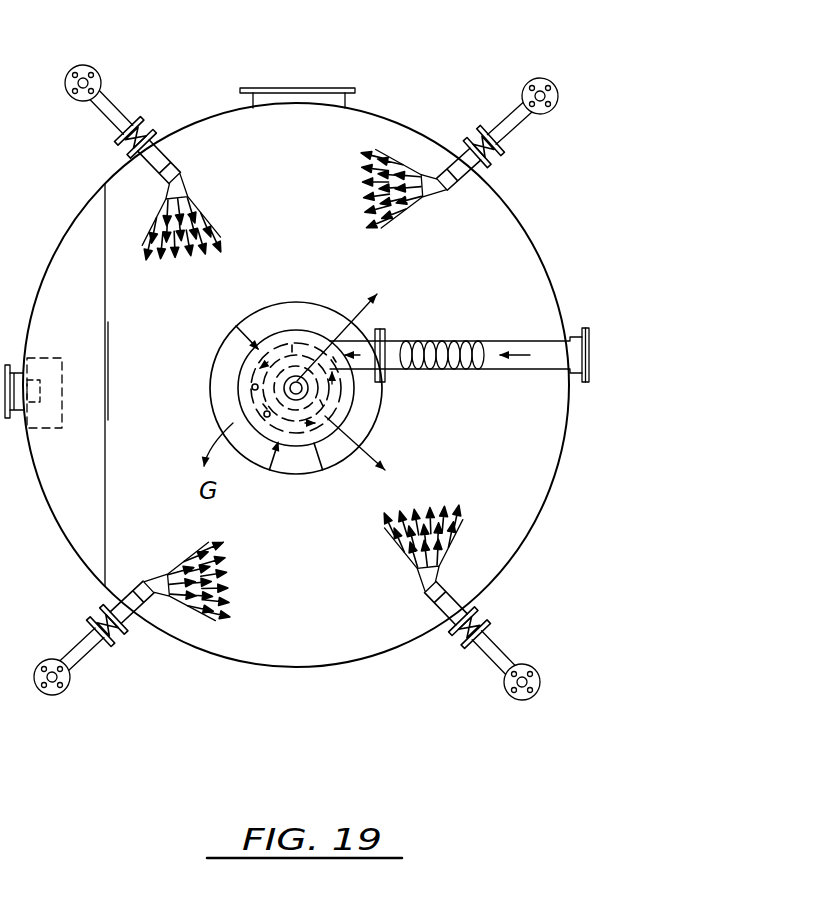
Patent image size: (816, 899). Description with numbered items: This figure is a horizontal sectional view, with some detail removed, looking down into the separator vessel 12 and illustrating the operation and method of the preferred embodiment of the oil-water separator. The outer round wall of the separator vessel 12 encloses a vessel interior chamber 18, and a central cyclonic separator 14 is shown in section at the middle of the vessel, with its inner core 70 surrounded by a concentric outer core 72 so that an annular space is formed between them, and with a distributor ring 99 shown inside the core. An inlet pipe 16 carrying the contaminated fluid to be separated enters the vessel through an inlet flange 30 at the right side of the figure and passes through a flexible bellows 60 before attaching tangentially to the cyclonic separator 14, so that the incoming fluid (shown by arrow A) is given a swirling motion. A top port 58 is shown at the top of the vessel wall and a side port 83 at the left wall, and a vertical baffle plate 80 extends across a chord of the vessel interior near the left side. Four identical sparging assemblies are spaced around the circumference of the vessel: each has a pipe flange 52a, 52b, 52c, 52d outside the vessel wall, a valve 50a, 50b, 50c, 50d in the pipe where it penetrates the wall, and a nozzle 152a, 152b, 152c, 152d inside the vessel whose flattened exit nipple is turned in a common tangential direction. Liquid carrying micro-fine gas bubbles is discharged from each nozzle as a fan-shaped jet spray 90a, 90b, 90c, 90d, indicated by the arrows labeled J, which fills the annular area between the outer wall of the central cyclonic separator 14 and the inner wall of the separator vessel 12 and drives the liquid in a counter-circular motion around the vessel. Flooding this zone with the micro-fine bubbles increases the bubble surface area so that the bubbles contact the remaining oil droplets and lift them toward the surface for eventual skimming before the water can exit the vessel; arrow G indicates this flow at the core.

The vessel 12 is at (537, 248).
The rotor assembly 14 is at (203, 362).
The SPIRALSEP 16 is at (527, 325).
The vessel interior chamber 18 is at (72, 265).
The inlet flange 30 is at (590, 342).
The top port 58 is at (300, 88).
The flexible bellows 60 is at (418, 343).
The inner housing 70 is at (318, 455).
The outer housing 72 is at (258, 310).
The baffle plate 80 is at (107, 455).
The side port 83 is at (43, 492).
The distributor ring 99 is at (262, 453).
The valve 50a is at (490, 604).
The valve 50b is at (97, 617).
The valve 50c is at (141, 124).
The valve 50d is at (500, 157).
The pipe flange 52a is at (503, 650).
The pipe flange 52b is at (80, 663).
The pipe flange 52c is at (113, 97).
The pipe flange 52d is at (517, 110).
The fan flow area 90a is at (453, 512).
The fan flow area 90b is at (250, 613).
The fan flow area 90c is at (148, 228).
The fan flow area 90d is at (340, 157).
The nozzle 152a is at (425, 594).
The nozzle 152b is at (142, 578).
The nozzle 152c is at (183, 191).
The nozzle 152d is at (443, 197).